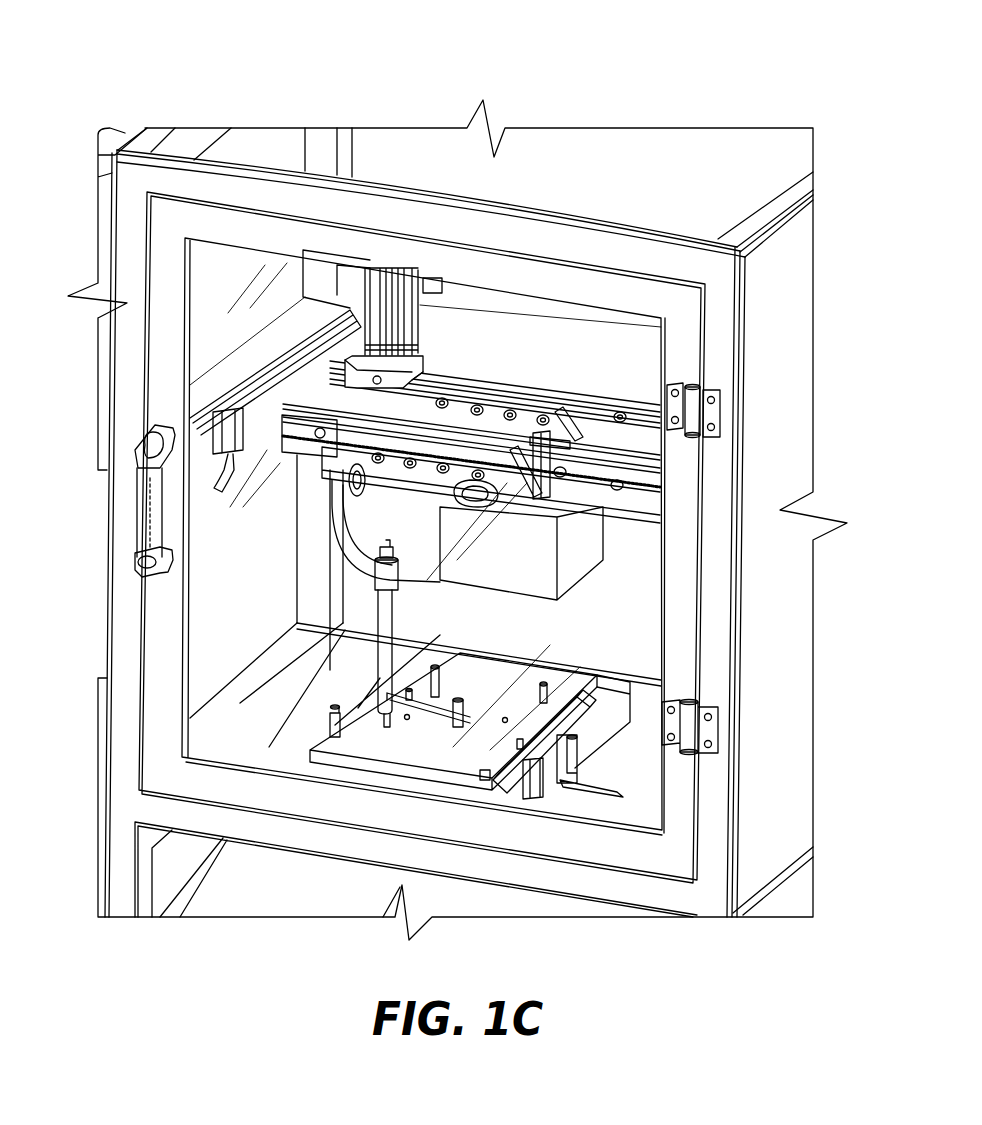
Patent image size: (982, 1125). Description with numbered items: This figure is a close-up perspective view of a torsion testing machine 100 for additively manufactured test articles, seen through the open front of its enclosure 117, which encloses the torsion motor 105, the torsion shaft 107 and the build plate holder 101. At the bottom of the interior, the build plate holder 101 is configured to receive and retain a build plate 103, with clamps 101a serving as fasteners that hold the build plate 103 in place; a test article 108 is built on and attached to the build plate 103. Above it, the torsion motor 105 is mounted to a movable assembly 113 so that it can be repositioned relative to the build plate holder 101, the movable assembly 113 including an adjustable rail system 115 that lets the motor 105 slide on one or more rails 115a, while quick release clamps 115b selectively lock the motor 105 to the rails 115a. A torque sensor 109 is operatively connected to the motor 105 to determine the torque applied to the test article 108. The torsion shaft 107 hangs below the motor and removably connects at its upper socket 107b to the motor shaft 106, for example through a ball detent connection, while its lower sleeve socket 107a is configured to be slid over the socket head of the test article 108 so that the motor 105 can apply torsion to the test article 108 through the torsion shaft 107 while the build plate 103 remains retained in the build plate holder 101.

The torsion testing machine 100 is at (178, 103).
The build plate holder 101 is at (597, 690).
The clamps 101a is at (567, 780).
The build plate 103 is at (523, 717).
The torsion motor 105 is at (370, 405).
The motor shaft 106 is at (385, 547).
The torsion shaft 107 is at (387, 613).
The lower sleeve socket 107a is at (385, 665).
The upper socket 107b is at (393, 578).
The test article 108 is at (377, 712).
The torque sensor 109 is at (513, 540).
The movable assembly 113 is at (426, 412).
The adjustable rail system 115 is at (557, 396).
The rails 115a is at (548, 478).
The quick release clamps 115b is at (543, 466).
The enclosure 117 is at (800, 333).